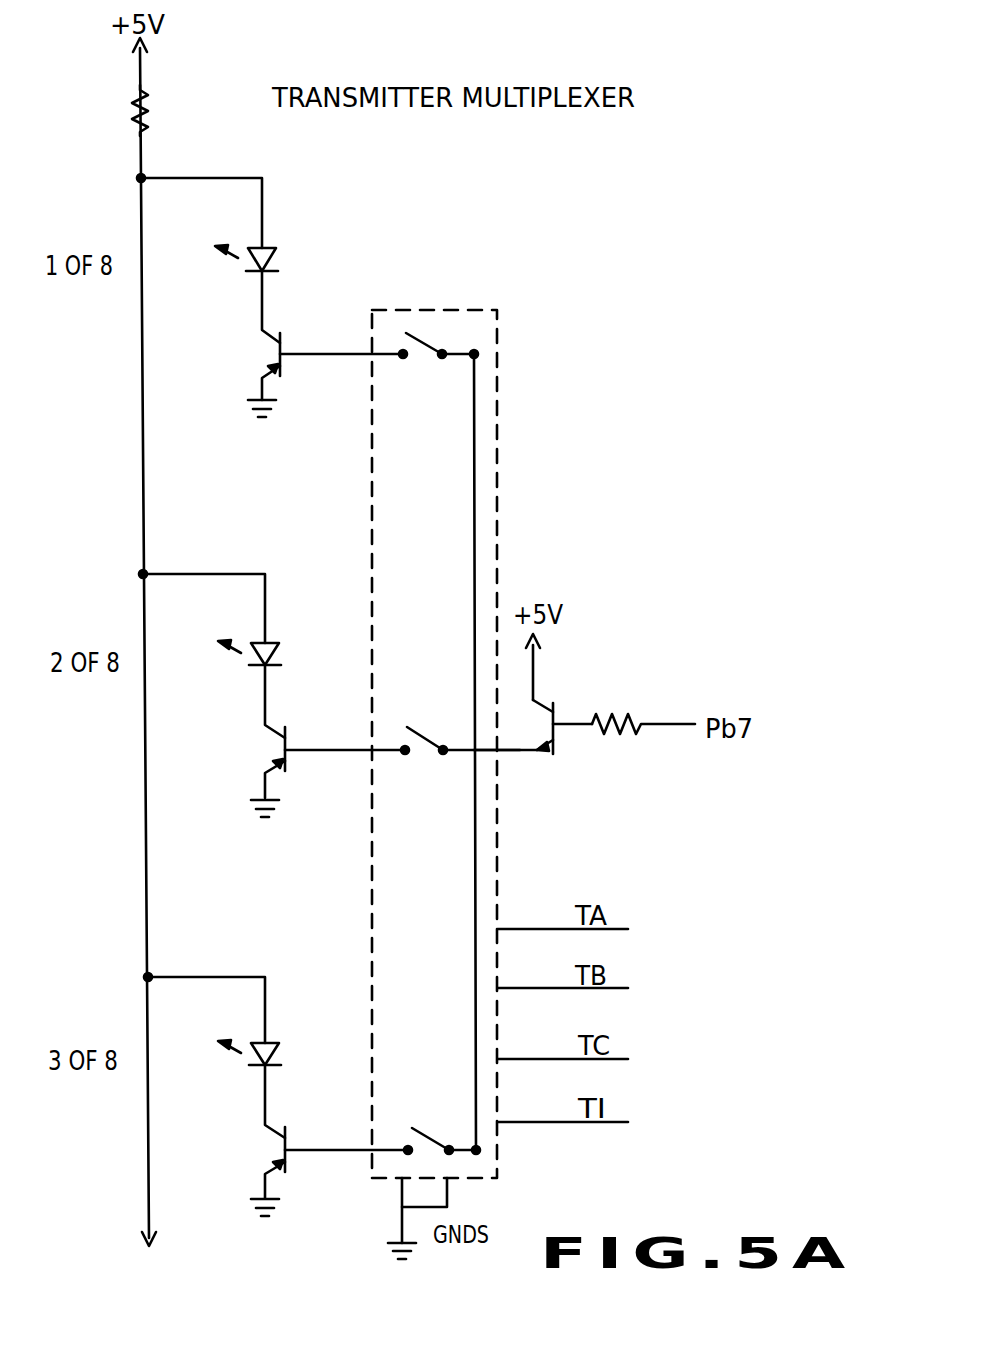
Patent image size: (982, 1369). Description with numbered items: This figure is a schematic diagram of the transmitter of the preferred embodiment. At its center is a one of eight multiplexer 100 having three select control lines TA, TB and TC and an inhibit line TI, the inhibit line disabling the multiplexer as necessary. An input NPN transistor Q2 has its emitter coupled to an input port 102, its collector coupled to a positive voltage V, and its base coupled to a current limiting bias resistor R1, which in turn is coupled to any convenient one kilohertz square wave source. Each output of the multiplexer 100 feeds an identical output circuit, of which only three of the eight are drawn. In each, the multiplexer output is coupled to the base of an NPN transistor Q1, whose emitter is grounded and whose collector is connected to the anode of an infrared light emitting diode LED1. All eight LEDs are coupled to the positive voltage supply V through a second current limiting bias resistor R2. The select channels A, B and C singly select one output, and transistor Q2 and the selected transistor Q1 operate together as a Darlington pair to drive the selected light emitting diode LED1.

The one of eight multiplexer 100 is at (453, 848).
The input port 102 is at (519, 753).
The NPN transistor Q1 is at (308, 335).
The input NPN transistor Q2 is at (562, 742).
The current limiting bias resistor R1 is at (643, 709).
The second current limiting bias resistor R2 is at (122, 110).
The infrared light emitting diode LED1 is at (283, 260).